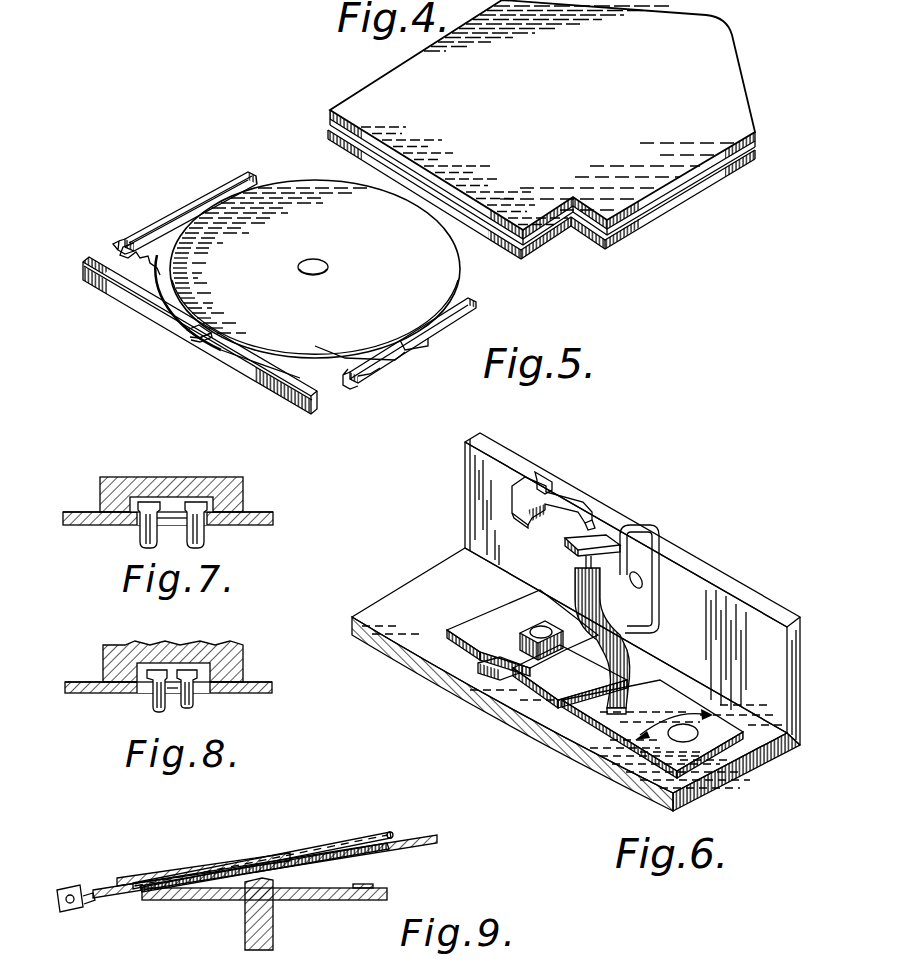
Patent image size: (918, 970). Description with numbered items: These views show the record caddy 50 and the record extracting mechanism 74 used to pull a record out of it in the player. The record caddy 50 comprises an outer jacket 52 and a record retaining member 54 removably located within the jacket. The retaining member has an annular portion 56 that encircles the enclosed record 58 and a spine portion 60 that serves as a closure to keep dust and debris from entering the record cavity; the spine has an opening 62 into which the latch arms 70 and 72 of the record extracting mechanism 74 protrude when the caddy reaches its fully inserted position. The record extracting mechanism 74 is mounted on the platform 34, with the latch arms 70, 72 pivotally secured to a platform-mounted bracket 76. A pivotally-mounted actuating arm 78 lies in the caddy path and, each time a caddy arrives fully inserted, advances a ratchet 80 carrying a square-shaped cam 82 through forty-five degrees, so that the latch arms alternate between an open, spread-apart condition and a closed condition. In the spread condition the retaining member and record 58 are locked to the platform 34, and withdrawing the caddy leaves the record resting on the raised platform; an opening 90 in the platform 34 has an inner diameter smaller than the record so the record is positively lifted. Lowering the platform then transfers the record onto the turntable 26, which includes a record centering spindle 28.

In FIG. 9, the turntable 26 is at (315, 900).
In FIG. 9, the record centering spindle 28 is at (245, 905).
In FIG. 6, the platform 34 is at (420, 582).
In FIG. 9, the platform 34 is at (437, 838).
In FIG. 5, the record caddy 50 is at (194, 115).
In FIG. 4, the outer jacket 52 is at (748, 104).
In FIG. 5, the record retaining member 54 is at (156, 205).
In FIG. 5, the annular portion 56 is at (412, 333).
In FIG. 5, the record 58 is at (318, 188).
In FIG. 9, the record 58 is at (355, 840).
In FIG. 5, the spine portion 60 is at (197, 335).
In FIG. 7, the spine portion 60 is at (181, 479).
In FIG. 8, the spine portion 60 is at (176, 664).
In FIG. 9, the spine portion 60 is at (113, 878).
In FIG. 5, the opening 62 is at (193, 344).
In FIG. 7, the opening 62 is at (185, 497).
In FIG. 8, the opening 62 is at (140, 668).
In FIG. 6, the latch arm 70 is at (514, 509).
In FIG. 7, the latch arm 70 is at (140, 530).
In FIG. 8, the latch arm 70 is at (152, 700).
In FIG. 6, the latch arm 72 is at (566, 541).
In FIG. 7, the latch arm 72 is at (204, 530).
In FIG. 8, the latch arm 72 is at (194, 700).
In FIG. 6, the record extracting mechanism 74 is at (745, 528).
In FIG. 9, the record extracting mechanism 74 is at (72, 888).
In FIG. 6, the bracket 76 is at (753, 588).
In FIG. 6, the actuating arm 78 is at (646, 603).
In FIG. 6, the ratchet 80 is at (483, 684).
In FIG. 6, the square-shaped cam 82 is at (515, 617).
In FIG. 9, the opening 90 is at (377, 853).